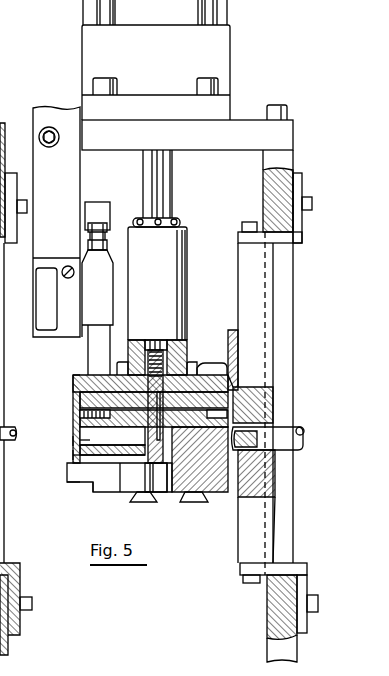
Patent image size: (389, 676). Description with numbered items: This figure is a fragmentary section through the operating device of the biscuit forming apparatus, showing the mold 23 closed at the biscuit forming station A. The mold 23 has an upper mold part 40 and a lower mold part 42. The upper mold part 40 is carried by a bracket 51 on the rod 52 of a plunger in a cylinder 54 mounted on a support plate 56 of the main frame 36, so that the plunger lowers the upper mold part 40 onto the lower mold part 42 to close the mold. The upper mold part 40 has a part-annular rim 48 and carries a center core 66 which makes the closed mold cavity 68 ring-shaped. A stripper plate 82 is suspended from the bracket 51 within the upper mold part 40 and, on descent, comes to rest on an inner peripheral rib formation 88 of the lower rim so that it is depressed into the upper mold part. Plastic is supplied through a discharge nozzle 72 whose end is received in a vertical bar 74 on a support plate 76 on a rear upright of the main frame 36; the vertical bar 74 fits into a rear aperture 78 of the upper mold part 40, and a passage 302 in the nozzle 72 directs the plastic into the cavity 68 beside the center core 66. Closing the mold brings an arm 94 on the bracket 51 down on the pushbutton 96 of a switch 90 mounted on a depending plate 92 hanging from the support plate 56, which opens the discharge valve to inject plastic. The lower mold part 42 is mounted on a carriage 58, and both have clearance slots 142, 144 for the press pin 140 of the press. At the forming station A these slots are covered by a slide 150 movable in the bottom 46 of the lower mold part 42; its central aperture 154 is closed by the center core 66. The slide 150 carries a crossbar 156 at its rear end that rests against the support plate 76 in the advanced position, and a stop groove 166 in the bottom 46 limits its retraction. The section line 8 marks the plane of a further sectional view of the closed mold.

The cylinder 54 is at (185, 13).
The support plate 56 is at (233, 133).
The main frame 36 is at (299, 151).
The depending plate 92 is at (72, 178).
The arm 94 is at (98, 205).
The switch 90 is at (97, 256).
The pushbutton 96 is at (107, 235).
The rod 52 is at (158, 183).
The biscuit forming station A is at (203, 268).
The support plate 76 is at (258, 287).
The bracket 51 is at (188, 320).
The stop groove 166 is at (188, 365).
The vertical bar 74 is at (241, 354).
The clearance slot 144 is at (173, 418).
The rear aperture 78 is at (263, 392).
The upper mold part 40 is at (82, 397).
The stripper plate 82 is at (233, 388).
The section line 8 is at (44, 434).
The discharge nozzle 72 is at (287, 452).
The passage 302 is at (66, 441).
The mold 23 is at (80, 442).
The part-annular rim 48 is at (76, 452).
The central aperture 154 is at (74, 458).
The slide 150 is at (68, 472).
The carriage 58 is at (80, 473).
The clearance slot 142 is at (71, 491).
The mold cavity 68 is at (112, 472).
The center core 66 is at (132, 472).
The press pin 140 is at (172, 493).
The bottom 46 is at (203, 466).
The lower mold part 42 is at (217, 492).
The crossbar 156 is at (263, 478).
The inner peripheral rib formation 88 is at (243, 487).